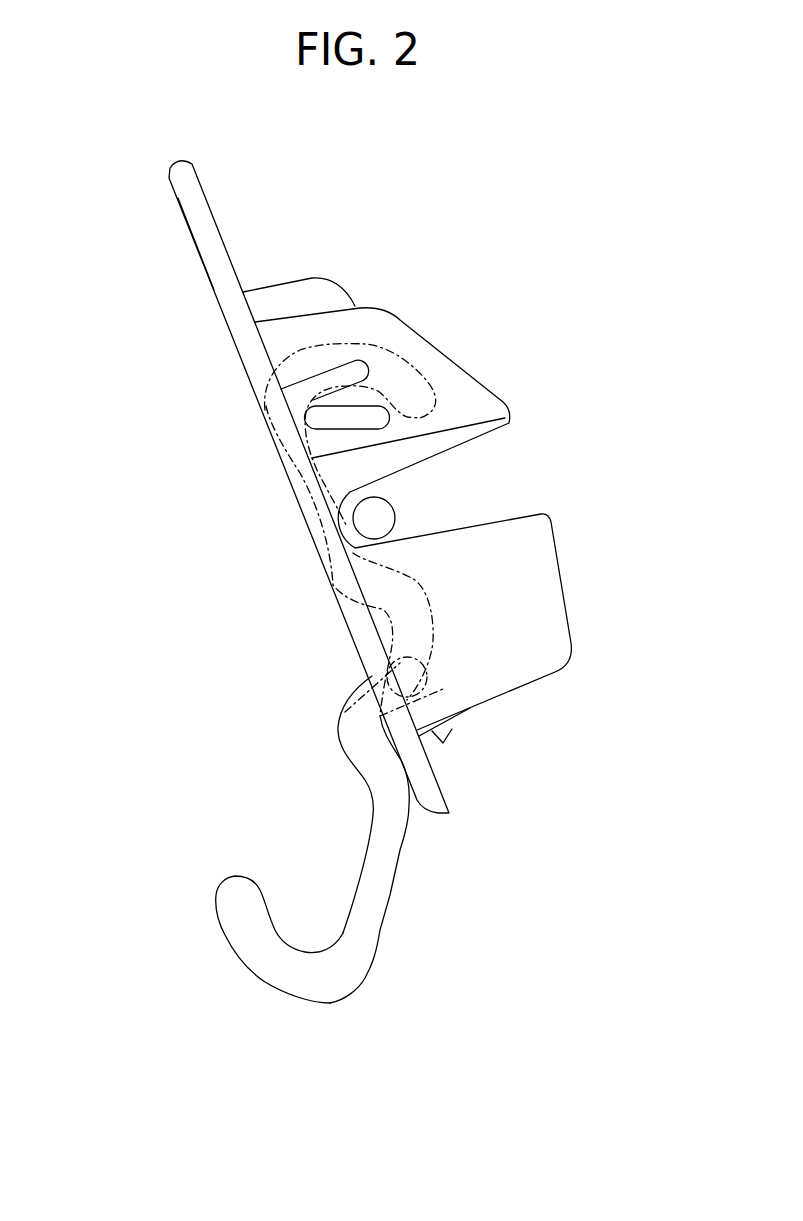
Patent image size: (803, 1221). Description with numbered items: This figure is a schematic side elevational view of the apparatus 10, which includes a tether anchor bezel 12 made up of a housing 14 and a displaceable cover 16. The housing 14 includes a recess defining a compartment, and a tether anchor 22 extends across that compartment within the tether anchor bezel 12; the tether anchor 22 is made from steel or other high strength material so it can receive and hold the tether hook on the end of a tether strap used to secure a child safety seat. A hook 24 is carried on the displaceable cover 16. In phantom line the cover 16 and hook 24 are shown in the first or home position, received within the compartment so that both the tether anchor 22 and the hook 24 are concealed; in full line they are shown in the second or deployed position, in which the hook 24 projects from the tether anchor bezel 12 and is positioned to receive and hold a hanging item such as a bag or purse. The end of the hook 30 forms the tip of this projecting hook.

The apparatus 10 is at (523, 240).
The tether anchor bezel 12 is at (209, 416).
The housing 14 is at (196, 259).
The displaceable cover 16 is at (446, 599).
The tether anchor 22 is at (390, 517).
The hook 24 is at (412, 358).
The hook end 30 is at (242, 935).